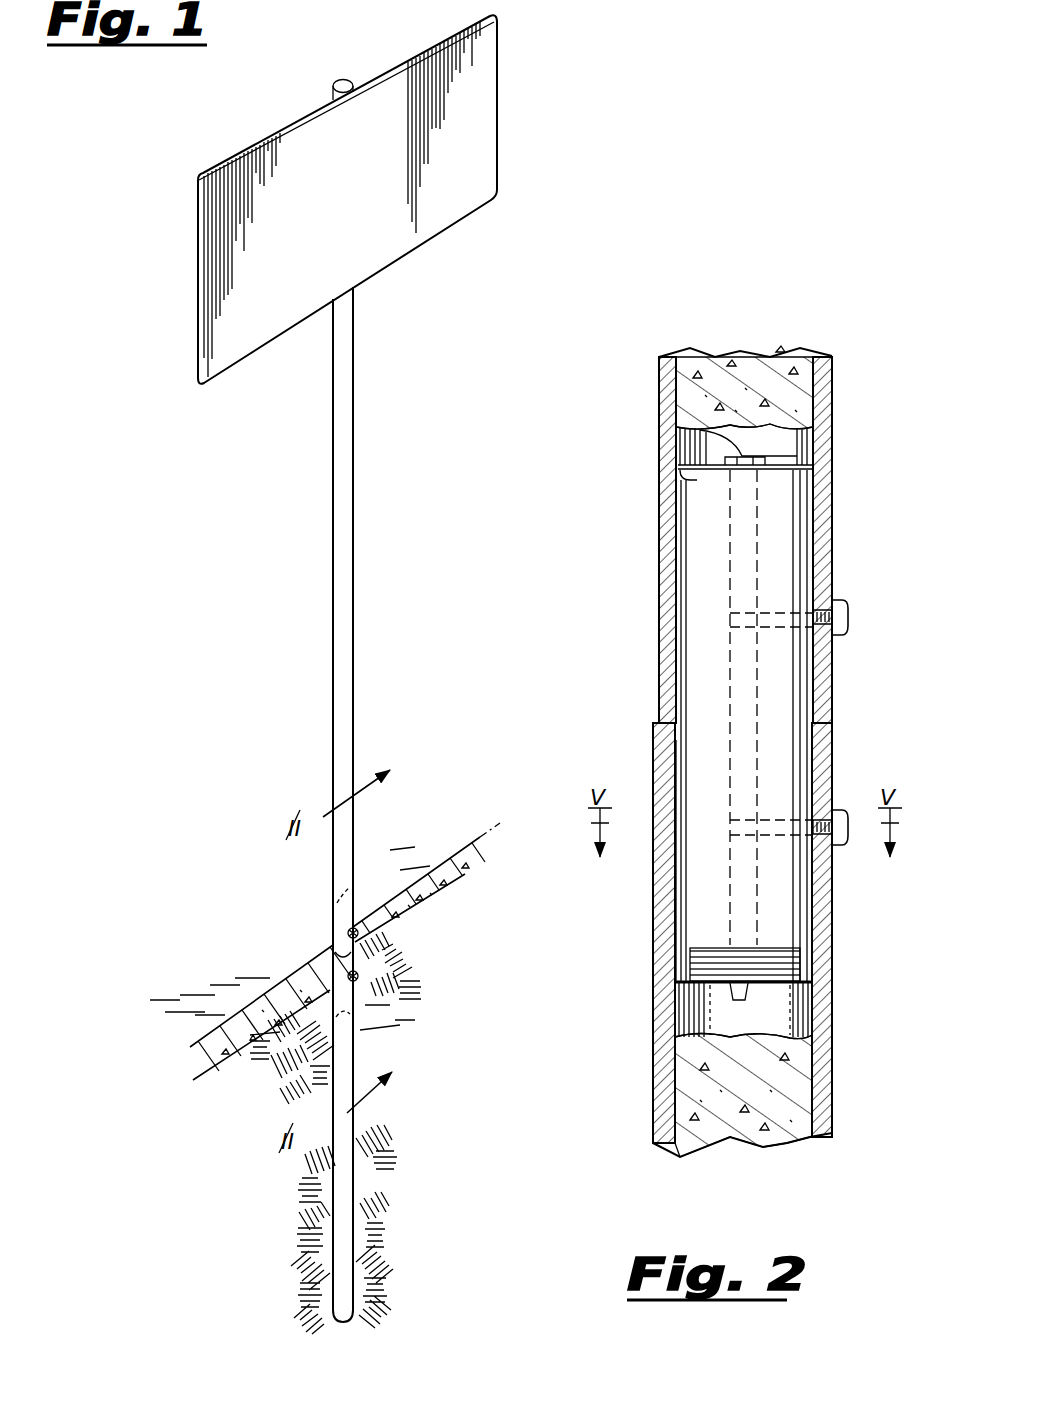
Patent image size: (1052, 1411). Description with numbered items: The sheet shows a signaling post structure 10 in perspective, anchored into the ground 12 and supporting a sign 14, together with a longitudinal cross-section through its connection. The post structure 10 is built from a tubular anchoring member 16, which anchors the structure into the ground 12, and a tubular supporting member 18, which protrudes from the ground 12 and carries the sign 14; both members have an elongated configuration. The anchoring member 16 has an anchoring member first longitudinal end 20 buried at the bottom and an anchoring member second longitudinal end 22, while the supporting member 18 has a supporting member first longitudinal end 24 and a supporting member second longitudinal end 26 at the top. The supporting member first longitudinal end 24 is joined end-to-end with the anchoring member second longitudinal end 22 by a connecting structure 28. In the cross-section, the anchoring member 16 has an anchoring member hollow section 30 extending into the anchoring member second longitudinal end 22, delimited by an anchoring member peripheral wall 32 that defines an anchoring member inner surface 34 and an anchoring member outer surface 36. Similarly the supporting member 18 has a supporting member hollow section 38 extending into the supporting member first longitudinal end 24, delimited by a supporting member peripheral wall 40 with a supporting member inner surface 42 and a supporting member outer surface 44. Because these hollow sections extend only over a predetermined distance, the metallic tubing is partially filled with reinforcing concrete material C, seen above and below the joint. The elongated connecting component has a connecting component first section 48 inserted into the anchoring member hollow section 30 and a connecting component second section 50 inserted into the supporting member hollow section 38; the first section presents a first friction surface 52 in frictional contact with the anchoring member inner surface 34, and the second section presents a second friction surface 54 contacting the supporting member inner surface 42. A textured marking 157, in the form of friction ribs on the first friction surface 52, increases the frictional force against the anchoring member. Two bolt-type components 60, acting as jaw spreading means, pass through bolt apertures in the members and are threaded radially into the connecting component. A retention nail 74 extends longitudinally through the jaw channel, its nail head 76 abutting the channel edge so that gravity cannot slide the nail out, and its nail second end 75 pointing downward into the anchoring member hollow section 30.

In FIG. 1, the post structure 10 is at (195, 552).
In FIG. 1, the ground 12 is at (295, 1057).
In FIG. 1, the sign 14 is at (478, 112).
In FIG. 1, the tubular anchoring member 16 is at (345, 1205).
In FIG. 2, the tubular anchoring member 16 is at (842, 1068).
In FIG. 1, the tubular supporting member 18 is at (352, 513).
In FIG. 2, the tubular supporting member 18 is at (852, 472).
In FIG. 1, the anchoring member first longitudinal end 20 is at (370, 1312).
In FIG. 1, the anchoring member second longitudinal end 22 is at (330, 968).
In FIG. 2, the anchoring member second longitudinal end 22 is at (840, 740).
In FIG. 1, the supporting member first longitudinal end 24 is at (363, 905).
In FIG. 2, the supporting member first longitudinal end 24 is at (850, 700).
In FIG. 1, the supporting member second longitudinal end 26 is at (328, 88).
In FIG. 2, the connecting structure 28 is at (650, 722).
In FIG. 2, the anchoring member hollow section 30 is at (772, 1005).
In FIG. 2, the anchoring member peripheral wall 32 is at (662, 1020).
In FIG. 2, the anchoring member inner surface 34 is at (690, 1043).
In FIG. 2, the anchoring member outer surface 36 is at (668, 1000).
In FIG. 2, the supporting member hollow section 38 is at (775, 452).
In FIG. 2, the supporting member peripheral wall 40 is at (668, 511).
In FIG. 2, the supporting member inner surface 42 is at (690, 478).
In FIG. 2, the supporting member outer surface 44 is at (662, 445).
In FIG. 2, the connecting component first section 48 is at (760, 876).
In FIG. 2, the connecting component second section 50 is at (760, 540).
In FIG. 2, the first friction surface 52 is at (665, 905).
In FIG. 2, the second friction surface 54 is at (662, 555).
In FIG. 1, the bolt-type component 60 is at (363, 978).
In FIG. 2, the bolt-type component 60 is at (857, 615).
In FIG. 2, the retention nail 74 is at (730, 583).
In FIG. 2, the nail second end 75 is at (752, 988).
In FIG. 2, the nail head 76 is at (690, 432).
In FIG. 2, the textured marking 157 is at (708, 962).
In FIG. 2, the concrete material C is at (790, 378).